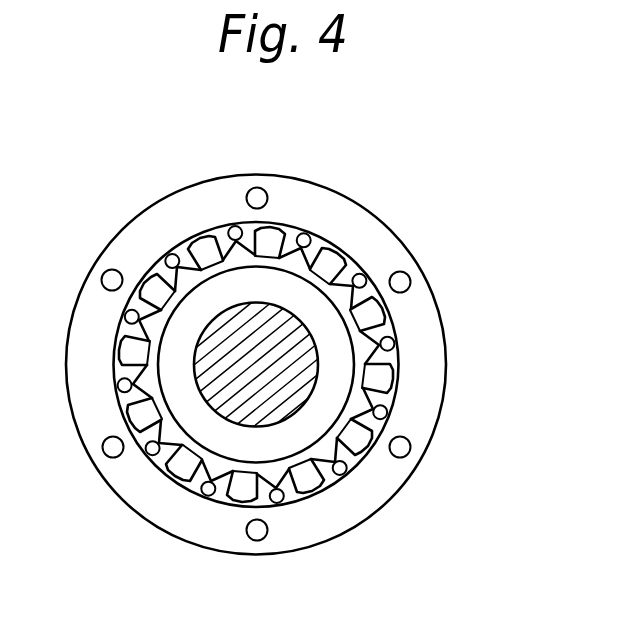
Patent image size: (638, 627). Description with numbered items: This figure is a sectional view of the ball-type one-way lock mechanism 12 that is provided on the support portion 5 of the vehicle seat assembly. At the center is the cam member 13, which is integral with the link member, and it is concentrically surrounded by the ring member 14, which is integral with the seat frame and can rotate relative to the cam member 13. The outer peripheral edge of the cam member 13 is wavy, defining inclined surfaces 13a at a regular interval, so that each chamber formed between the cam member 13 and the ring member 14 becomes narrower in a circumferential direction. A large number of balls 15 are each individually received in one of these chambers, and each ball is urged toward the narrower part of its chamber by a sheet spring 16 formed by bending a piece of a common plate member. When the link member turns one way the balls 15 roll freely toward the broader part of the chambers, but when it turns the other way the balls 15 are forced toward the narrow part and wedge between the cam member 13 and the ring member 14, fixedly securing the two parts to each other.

The ball-type one-way lock mechanism 12 is at (310, 348).
The cam member 13 is at (313, 382).
The inclined surfaces 13a is at (380, 425).
The support portion 5 is at (310, 342).
The ring member 14 is at (395, 482).
The balls 15 is at (283, 503).
The sheet spring 16 is at (175, 480).